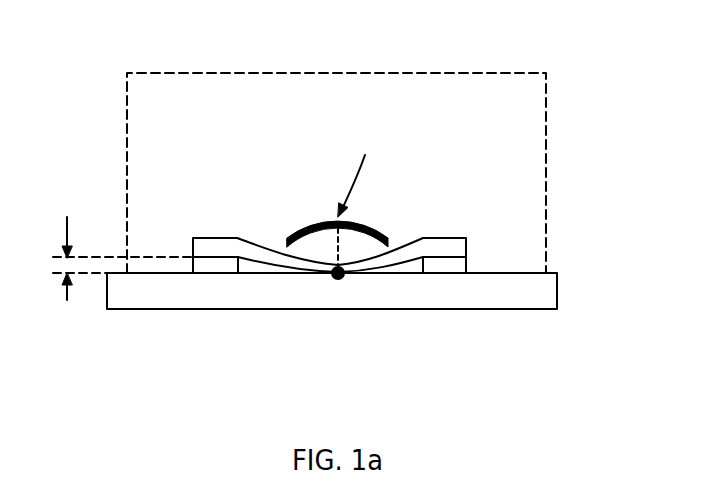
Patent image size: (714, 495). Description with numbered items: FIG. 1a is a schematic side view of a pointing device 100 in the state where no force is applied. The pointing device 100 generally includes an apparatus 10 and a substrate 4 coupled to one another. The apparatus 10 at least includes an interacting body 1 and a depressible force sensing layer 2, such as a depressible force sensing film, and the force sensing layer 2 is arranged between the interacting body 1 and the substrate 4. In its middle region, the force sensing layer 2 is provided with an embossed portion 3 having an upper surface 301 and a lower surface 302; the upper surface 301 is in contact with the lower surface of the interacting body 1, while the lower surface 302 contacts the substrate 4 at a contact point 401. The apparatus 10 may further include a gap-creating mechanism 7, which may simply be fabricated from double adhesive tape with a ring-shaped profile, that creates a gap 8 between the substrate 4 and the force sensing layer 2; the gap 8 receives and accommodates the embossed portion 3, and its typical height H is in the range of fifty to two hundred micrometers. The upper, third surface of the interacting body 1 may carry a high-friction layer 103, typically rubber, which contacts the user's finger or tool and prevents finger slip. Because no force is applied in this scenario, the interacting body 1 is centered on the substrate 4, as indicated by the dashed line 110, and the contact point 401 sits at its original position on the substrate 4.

The pointing device 100 is at (147, 53).
The apparatus 10 is at (450, 73).
The interacting body 1 is at (362, 175).
The high-friction layer 103 is at (323, 232).
The embossed portion 3 is at (275, 262).
The upper surface 301 is at (400, 240).
The lower surface 302 is at (398, 255).
The depressible force sensing layer 2 is at (457, 252).
The gap-creating mechanism 7 is at (213, 262).
The gap 8 is at (253, 268).
The substrate 4 is at (549, 300).
The contact point 401 is at (338, 278).
The dashed line 110 is at (342, 246).